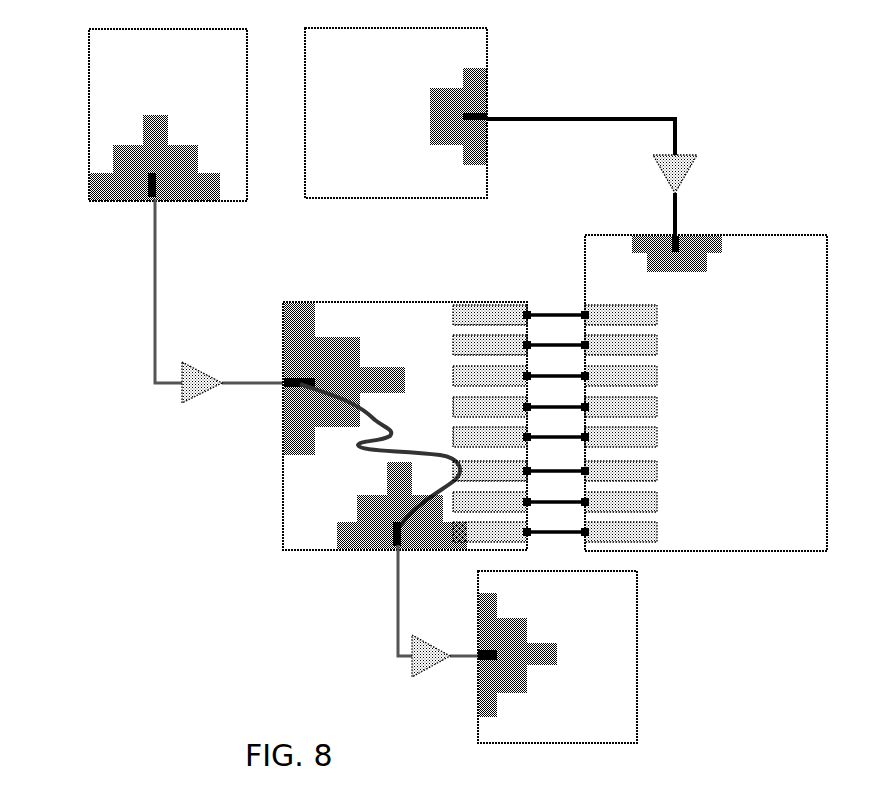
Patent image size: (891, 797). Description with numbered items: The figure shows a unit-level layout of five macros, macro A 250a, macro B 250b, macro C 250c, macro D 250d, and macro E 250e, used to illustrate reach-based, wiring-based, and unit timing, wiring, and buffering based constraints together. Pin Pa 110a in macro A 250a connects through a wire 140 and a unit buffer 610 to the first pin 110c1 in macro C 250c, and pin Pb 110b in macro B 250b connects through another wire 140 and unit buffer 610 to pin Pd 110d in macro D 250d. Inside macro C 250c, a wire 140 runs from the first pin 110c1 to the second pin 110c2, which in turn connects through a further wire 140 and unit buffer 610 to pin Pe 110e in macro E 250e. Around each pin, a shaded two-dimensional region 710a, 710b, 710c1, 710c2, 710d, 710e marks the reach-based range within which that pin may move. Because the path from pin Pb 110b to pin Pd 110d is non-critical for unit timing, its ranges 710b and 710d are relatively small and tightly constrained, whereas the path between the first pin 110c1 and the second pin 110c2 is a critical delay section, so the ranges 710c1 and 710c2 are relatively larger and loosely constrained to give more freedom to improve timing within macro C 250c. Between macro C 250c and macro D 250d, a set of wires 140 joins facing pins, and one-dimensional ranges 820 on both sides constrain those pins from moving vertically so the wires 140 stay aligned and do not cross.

The macro A 250a is at (89, 61).
The macro B 250b is at (305, 88).
The macro C 250c is at (436, 300).
The macro D 250d is at (828, 418).
The macro E 250e is at (637, 678).
The two-dimensional region 710a is at (118, 124).
The two-dimensional region 710b is at (418, 128).
The range 710c1 is at (331, 320).
The range 710c2 is at (340, 503).
The two-dimensional region 710d is at (720, 276).
The two-dimensional region 710e is at (544, 631).
The pin Pa 110a is at (148, 201).
The pin Pb 110b is at (490, 113).
The pin Pc1 110c1 is at (283, 383).
The pin Pc2 110c2 is at (396, 550).
The pin Pd 110d is at (682, 232).
The pin Pe 110e is at (476, 671).
The unit buffer 610 is at (203, 395).
The wire 140 is at (362, 450).
The ranges 820 is at (660, 343).